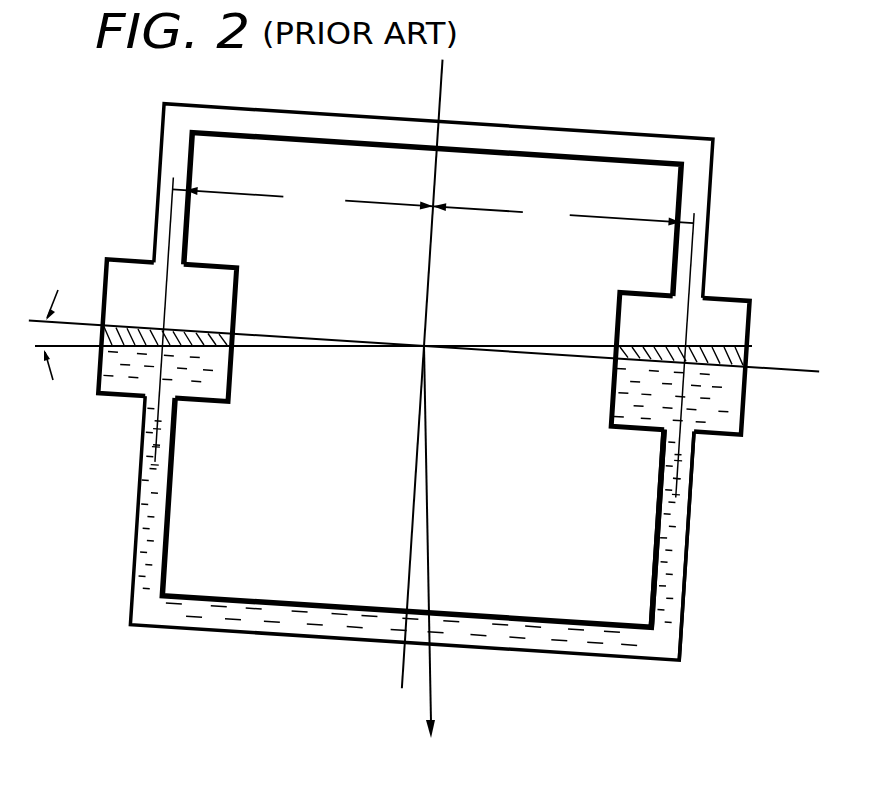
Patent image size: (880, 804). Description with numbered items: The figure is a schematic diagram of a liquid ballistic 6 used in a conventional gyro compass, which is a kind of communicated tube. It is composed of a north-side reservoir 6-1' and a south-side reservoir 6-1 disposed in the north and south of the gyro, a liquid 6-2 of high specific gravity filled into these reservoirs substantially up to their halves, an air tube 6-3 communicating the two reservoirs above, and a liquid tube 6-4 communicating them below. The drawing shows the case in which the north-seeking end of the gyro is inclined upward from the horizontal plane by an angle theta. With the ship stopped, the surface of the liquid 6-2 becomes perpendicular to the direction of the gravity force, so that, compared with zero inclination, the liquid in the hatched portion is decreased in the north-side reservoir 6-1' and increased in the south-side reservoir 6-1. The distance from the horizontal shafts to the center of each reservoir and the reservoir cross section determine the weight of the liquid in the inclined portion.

The liquid ballistic 6 is at (398, 89).
The south-side reservoir 6-1 is at (702, 337).
The north-side reservoir 6-1' is at (184, 366).
The liquid 6-2 is at (723, 428).
The air tube 6-3 is at (683, 137).
The liquid tube 6-4 is at (582, 655).